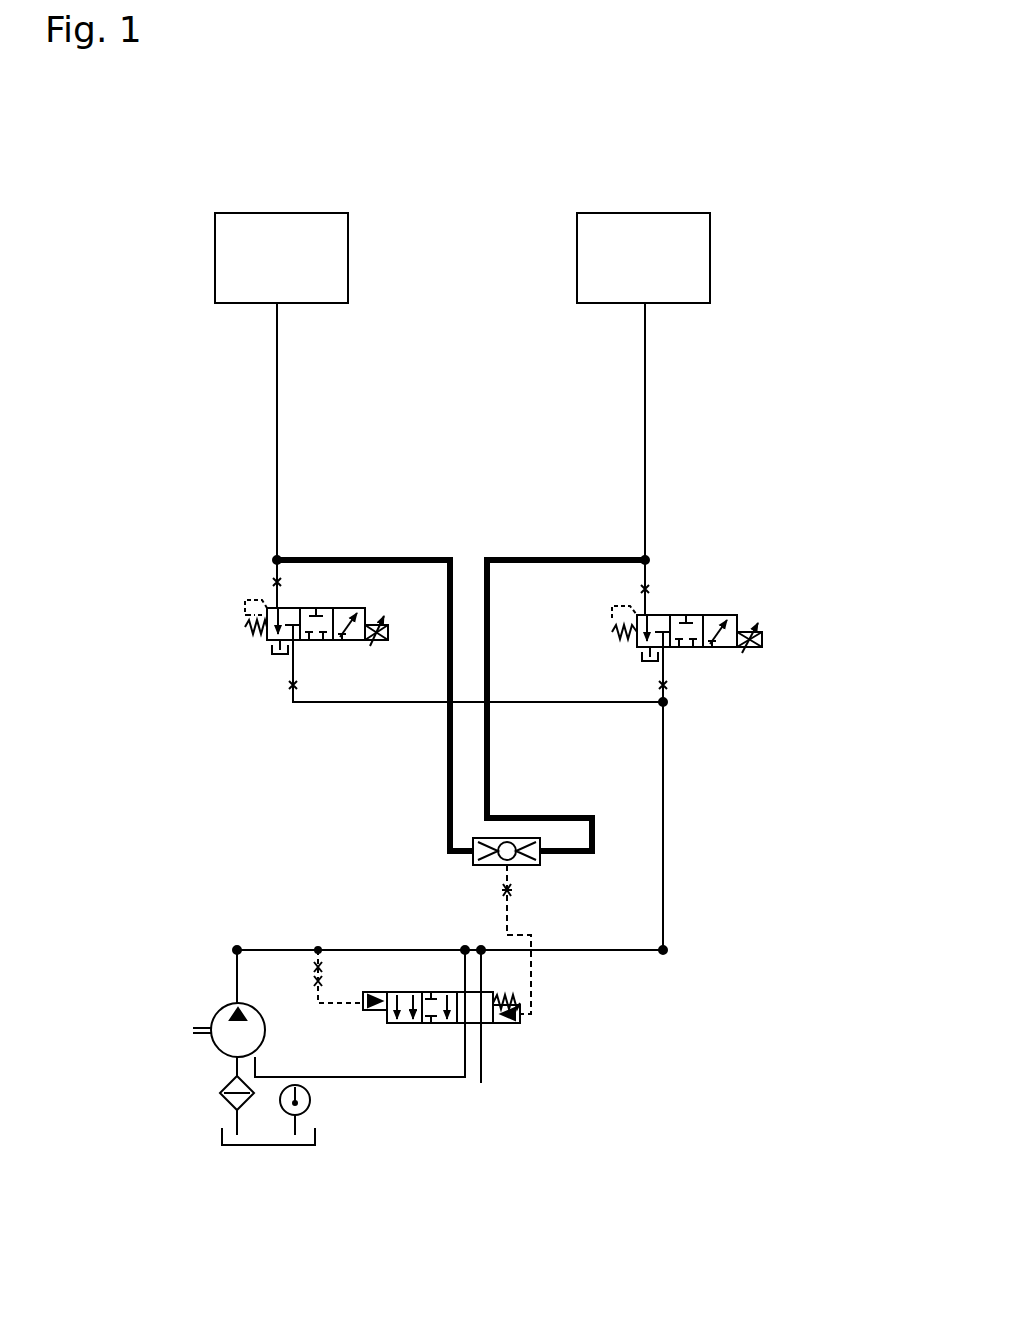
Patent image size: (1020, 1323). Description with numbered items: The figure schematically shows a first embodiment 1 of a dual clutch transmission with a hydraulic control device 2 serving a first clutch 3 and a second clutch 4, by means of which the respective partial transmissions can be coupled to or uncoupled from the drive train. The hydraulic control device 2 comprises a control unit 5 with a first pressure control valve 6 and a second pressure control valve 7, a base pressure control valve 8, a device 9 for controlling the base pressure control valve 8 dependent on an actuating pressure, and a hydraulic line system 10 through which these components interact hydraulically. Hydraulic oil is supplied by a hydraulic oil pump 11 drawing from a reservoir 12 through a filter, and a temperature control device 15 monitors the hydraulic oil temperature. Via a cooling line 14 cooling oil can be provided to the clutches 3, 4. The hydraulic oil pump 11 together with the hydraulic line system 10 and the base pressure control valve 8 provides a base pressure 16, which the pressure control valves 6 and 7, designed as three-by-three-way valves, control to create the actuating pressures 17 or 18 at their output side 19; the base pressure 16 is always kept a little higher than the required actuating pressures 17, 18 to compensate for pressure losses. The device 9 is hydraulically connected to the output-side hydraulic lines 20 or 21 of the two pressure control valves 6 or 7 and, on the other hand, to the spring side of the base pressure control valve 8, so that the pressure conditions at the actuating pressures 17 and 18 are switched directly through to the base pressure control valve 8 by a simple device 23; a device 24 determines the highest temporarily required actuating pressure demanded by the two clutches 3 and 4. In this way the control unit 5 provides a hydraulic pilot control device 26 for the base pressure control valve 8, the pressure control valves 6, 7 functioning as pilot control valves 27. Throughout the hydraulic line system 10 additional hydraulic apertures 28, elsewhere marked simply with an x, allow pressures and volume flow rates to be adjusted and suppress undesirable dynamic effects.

The first embodiment 1 is at (744, 142).
The hydraulic control device 2 is at (588, 1100).
The first clutch 3 is at (648, 278).
The second clutch 4 is at (286, 278).
The control unit 5 is at (249, 632).
The first pressure control valve 6 is at (723, 604).
The second pressure control valve 7 is at (250, 680).
The base pressure control valve 8 is at (565, 1017).
The device for controlling the base pressure control valve dependent on an actuating 9 is at (402, 854).
The hydraulic line system 10 is at (665, 857).
The hydraulic oil pump 11 is at (212, 1010).
The reservoir 12 is at (285, 1150).
The cooling line 14 is at (481, 1083).
The temperature control device 15 is at (311, 1104).
The base pressure 16 is at (665, 950).
The actuating pressure 17 is at (647, 438).
The actuating pressure 18 is at (277, 446).
The output side 19 is at (480, 513).
The output-side hydraulic line 20 is at (647, 524).
The output-side hydraulic line 21 is at (277, 535).
The device that switches the actuating pressures through 23 is at (343, 792).
The device for determining the highest temporarily required actuating pressure 24 is at (530, 804).
The hydraulic pilot control device 26 is at (179, 652).
The pilot control valve 27 is at (760, 665).
The hydraulic aperture 28 is at (490, 893).